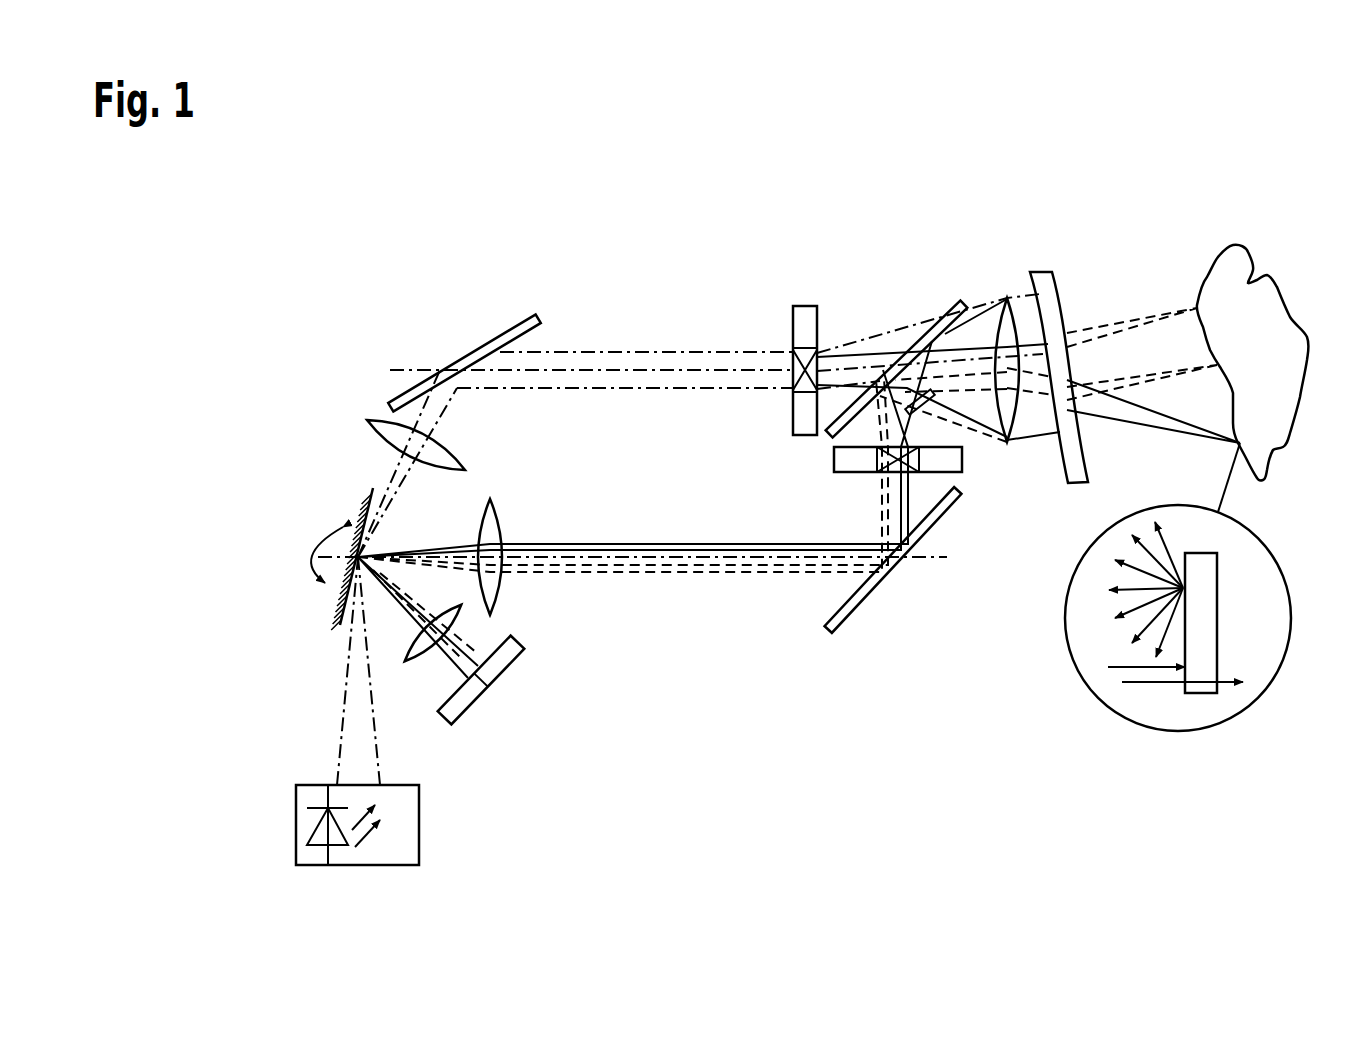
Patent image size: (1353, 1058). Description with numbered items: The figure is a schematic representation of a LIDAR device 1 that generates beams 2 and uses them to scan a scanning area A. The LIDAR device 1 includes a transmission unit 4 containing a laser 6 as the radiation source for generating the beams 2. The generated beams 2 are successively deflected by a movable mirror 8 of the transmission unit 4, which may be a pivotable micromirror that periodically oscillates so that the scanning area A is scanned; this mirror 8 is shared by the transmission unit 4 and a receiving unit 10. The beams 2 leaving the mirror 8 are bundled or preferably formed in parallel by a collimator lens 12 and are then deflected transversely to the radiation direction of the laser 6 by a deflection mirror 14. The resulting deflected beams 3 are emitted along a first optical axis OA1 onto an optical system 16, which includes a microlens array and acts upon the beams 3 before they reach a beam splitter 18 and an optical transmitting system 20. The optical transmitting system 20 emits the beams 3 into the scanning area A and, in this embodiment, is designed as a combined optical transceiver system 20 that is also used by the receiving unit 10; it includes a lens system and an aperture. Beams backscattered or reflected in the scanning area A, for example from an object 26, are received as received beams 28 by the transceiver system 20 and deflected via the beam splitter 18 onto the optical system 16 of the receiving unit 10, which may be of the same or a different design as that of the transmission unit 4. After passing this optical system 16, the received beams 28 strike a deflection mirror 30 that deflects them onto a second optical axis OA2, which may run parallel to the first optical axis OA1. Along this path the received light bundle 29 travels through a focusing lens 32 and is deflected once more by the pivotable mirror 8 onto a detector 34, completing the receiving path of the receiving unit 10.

The LIDAR device 1 is at (345, 217).
The beams 2 is at (348, 705).
The deflected beams 3 is at (607, 370).
The transmission unit 4 is at (320, 333).
The laser 6 is at (302, 832).
The movable mirror 8 is at (333, 610).
The receiving unit 10 is at (907, 610).
The collimator lens 12 is at (388, 435).
The deflection mirror 14 is at (516, 323).
The optical system 16 is at (805, 320).
The beam splitter 18 is at (960, 300).
The optical transmitting system 20 is at (1213, 240).
The object 26 is at (1275, 368).
The received beams 28 is at (917, 420).
The received light bundle 29 is at (693, 573).
The deflection mirror 30 is at (837, 622).
The focusing lens 32 is at (490, 597).
The detector 34 is at (507, 660).
The scanning area A is at (1183, 270).
The first optical axis OA1 is at (591, 349).
The second optical axis OA2 is at (597, 555).